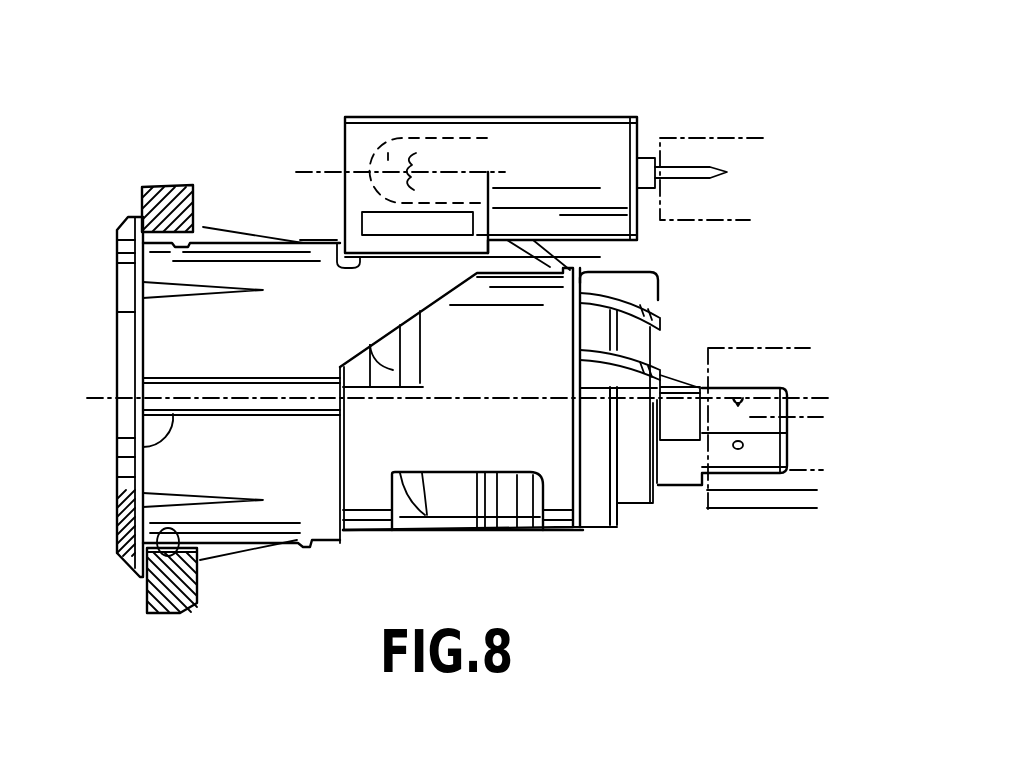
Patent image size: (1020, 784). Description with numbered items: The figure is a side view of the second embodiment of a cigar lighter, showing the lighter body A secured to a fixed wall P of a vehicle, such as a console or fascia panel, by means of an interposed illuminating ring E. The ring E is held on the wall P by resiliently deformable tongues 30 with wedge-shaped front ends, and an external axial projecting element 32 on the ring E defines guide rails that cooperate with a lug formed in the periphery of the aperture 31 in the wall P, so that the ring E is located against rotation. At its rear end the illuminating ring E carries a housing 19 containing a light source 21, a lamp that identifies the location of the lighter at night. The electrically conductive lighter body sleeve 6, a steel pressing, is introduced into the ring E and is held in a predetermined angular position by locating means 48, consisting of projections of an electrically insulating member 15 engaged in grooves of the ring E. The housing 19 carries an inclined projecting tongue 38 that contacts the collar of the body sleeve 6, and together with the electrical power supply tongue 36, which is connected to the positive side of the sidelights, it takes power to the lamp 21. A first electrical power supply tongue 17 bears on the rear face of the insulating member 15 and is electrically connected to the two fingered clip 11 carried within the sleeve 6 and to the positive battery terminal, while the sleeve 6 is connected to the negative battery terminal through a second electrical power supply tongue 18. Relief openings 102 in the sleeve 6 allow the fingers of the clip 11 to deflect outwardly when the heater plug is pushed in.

The lighter body sleeve 6 is at (563, 513).
The two fingered clip 11 is at (455, 498).
The electrically insulating member 15 is at (650, 280).
The first electrical power supply tongue 17 is at (767, 423).
The second electrical power supply tongue 18 is at (758, 462).
The housing 19 is at (632, 152).
The light source 21 is at (387, 148).
The resiliently deformable tongues 30 is at (208, 562).
The aperture 31 is at (180, 553).
The external axial projecting element 32 is at (143, 447).
The electrical power supply tongue 36 is at (710, 180).
The inclined projecting tongue 38 is at (535, 247).
The locating means 48 is at (670, 370).
The relief openings 102 is at (402, 522).
The fixed wall P is at (130, 195).
The illuminating ring E is at (112, 277).
The lighter body A is at (630, 534).